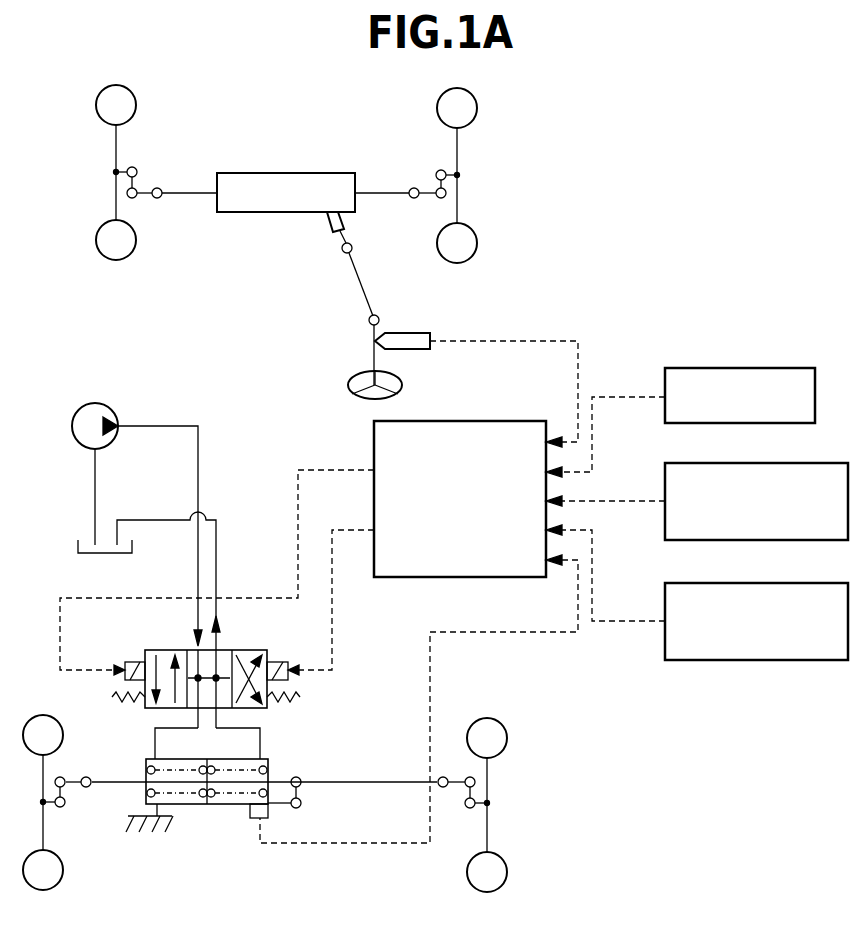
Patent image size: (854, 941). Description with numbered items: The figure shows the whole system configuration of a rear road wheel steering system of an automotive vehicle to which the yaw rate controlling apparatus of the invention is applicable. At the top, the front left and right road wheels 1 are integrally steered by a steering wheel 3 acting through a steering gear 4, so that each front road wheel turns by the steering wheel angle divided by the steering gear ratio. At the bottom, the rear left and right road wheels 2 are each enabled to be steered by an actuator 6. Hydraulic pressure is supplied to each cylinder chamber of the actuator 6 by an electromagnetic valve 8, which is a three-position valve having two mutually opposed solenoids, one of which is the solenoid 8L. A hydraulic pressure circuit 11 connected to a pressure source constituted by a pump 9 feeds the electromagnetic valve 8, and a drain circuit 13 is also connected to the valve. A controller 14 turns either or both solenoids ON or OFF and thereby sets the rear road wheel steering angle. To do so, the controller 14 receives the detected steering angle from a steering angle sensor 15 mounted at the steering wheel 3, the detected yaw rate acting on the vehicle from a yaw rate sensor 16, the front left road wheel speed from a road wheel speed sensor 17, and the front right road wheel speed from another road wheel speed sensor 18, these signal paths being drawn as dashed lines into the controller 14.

The front left and right road wheels 1 is at (136, 108).
The rear left and right road wheels 2 is at (64, 875).
The steering wheel 3 is at (352, 378).
The steering gear 4 is at (297, 172).
The actuator 6 is at (218, 804).
The electromagnetic valve 8 is at (265, 708).
The solenoid 8L is at (125, 672).
The pump 9 is at (96, 403).
The hydraulic pressure circuit 11 is at (200, 448).
The drain circuit 13 is at (140, 520).
The controller 14 is at (412, 577).
The steering angle sensor 15 is at (405, 333).
The yaw rate sensor 16 is at (780, 368).
The road wheel speed sensor 17 is at (820, 463).
The road wheel speed sensor 18 is at (780, 660).